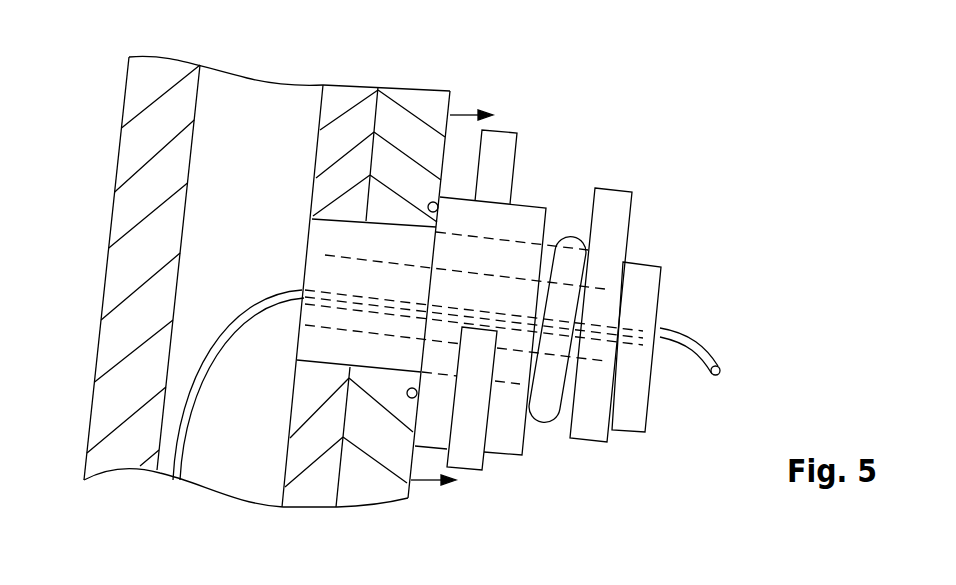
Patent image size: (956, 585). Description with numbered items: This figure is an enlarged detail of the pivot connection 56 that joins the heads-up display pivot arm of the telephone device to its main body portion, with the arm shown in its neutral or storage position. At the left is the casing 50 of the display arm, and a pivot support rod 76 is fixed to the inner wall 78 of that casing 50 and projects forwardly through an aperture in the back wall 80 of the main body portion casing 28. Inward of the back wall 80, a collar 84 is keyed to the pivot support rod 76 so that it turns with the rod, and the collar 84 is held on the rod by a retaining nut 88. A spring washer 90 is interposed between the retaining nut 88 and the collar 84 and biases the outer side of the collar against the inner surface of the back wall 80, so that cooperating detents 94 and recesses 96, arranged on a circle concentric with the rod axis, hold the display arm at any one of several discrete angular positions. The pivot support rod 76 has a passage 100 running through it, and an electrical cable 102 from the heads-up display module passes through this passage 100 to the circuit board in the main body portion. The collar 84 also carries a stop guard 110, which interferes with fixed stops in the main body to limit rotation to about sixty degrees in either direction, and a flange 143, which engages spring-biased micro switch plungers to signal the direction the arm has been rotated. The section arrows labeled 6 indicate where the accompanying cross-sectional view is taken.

The section line of FIG. 6 is at (452, 298).
The casing 28 is at (399, 70).
The casing 50 is at (106, 128).
The pivot connection 56 is at (673, 405).
The pivot support rod 76 is at (326, 206).
The inner wall 78 is at (322, 112).
The back wall 80 is at (338, 470).
The collar 84 is at (528, 206).
The retaining nut 88 is at (624, 190).
The spring washer 90 is at (554, 430).
The detents 94 is at (412, 387).
The recesses 96 is at (439, 211).
The passage 100 is at (326, 256).
The electrical cable 102 is at (672, 327).
The stop guard 110 is at (518, 147).
The flange 143 is at (485, 460).